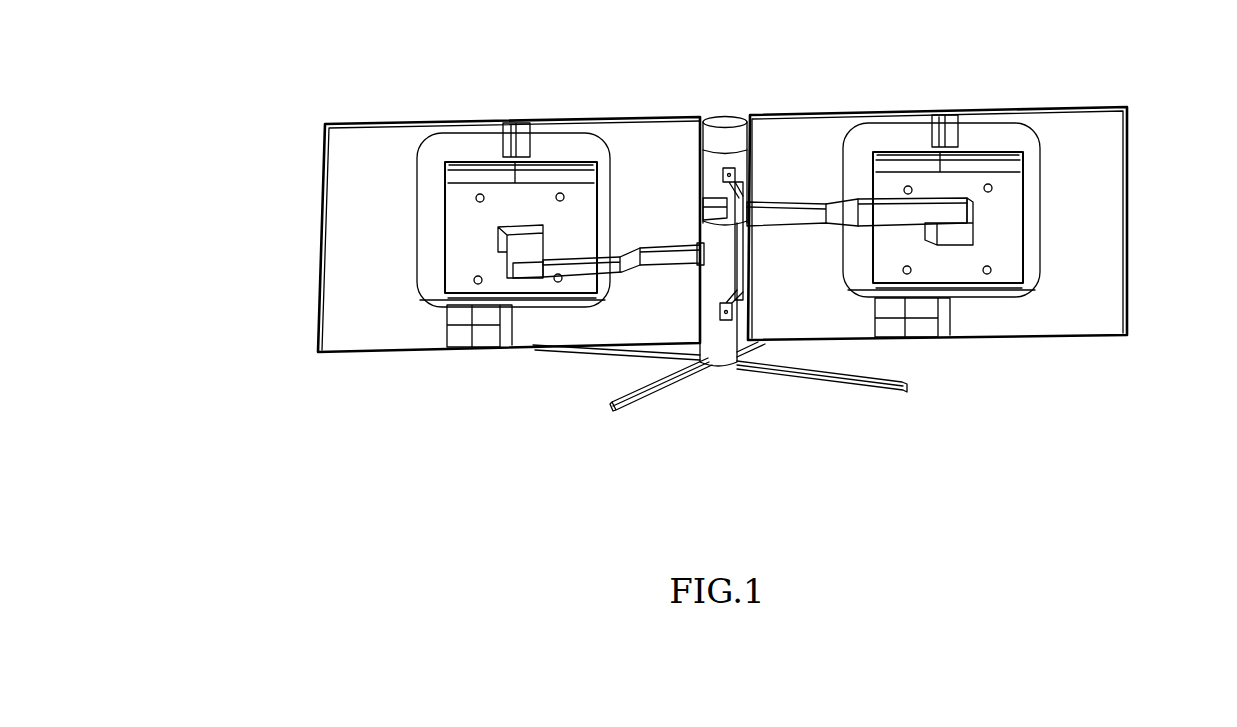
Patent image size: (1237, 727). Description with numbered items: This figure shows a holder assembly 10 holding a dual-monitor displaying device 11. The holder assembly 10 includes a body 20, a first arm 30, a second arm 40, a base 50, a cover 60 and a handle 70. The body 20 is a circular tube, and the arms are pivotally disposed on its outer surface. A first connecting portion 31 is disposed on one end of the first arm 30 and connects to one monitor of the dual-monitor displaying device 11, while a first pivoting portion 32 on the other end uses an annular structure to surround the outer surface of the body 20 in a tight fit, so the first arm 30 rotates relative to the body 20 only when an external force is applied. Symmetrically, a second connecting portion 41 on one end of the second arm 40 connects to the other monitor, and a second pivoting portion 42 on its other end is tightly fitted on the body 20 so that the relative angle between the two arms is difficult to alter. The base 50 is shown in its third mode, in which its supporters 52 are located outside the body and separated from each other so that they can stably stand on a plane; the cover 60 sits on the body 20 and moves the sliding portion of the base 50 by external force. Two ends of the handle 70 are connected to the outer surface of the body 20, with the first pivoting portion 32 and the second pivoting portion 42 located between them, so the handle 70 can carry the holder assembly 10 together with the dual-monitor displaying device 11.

The holder assembly 10 is at (699, 288).
The dual-monitor displaying device 11 is at (357, 190).
The body 20 is at (713, 333).
The first arm 30 is at (881, 141).
The first connecting portion 31 is at (957, 213).
The first pivoting portion 32 is at (717, 212).
The second arm 40 is at (596, 247).
The second connecting portion 41 is at (525, 238).
The second pivoting portion 42 is at (697, 240).
The base 50 is at (720, 399).
The supporter 52 is at (845, 378).
The cover 60 is at (727, 142).
The handle 70 is at (743, 195).